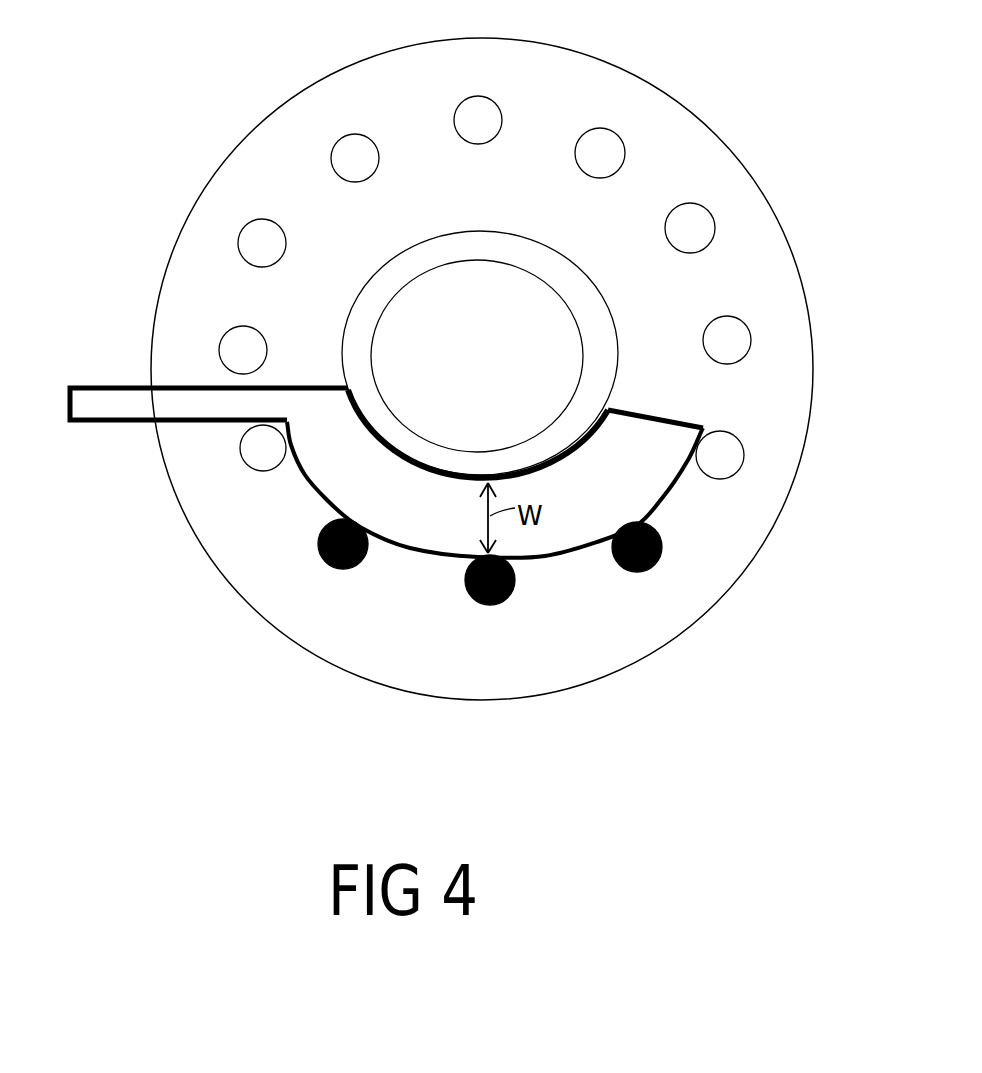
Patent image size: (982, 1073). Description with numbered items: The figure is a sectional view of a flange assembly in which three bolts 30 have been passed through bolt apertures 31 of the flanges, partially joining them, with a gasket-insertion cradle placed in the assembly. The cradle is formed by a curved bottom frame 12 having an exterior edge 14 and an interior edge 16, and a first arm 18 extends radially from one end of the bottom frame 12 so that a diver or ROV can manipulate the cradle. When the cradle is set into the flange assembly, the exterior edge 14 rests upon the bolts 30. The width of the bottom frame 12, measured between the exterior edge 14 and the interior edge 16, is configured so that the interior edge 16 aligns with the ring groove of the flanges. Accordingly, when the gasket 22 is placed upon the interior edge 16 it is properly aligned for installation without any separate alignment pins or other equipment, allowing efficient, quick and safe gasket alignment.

The bottom frame 12 is at (386, 474).
The exterior edge 14 is at (582, 446).
The interior edge 16 is at (578, 547).
The first arm 18 is at (117, 403).
The gasket 22 is at (522, 248).
The bolts 30 is at (338, 570).
The bolt apertures 31 is at (697, 232).